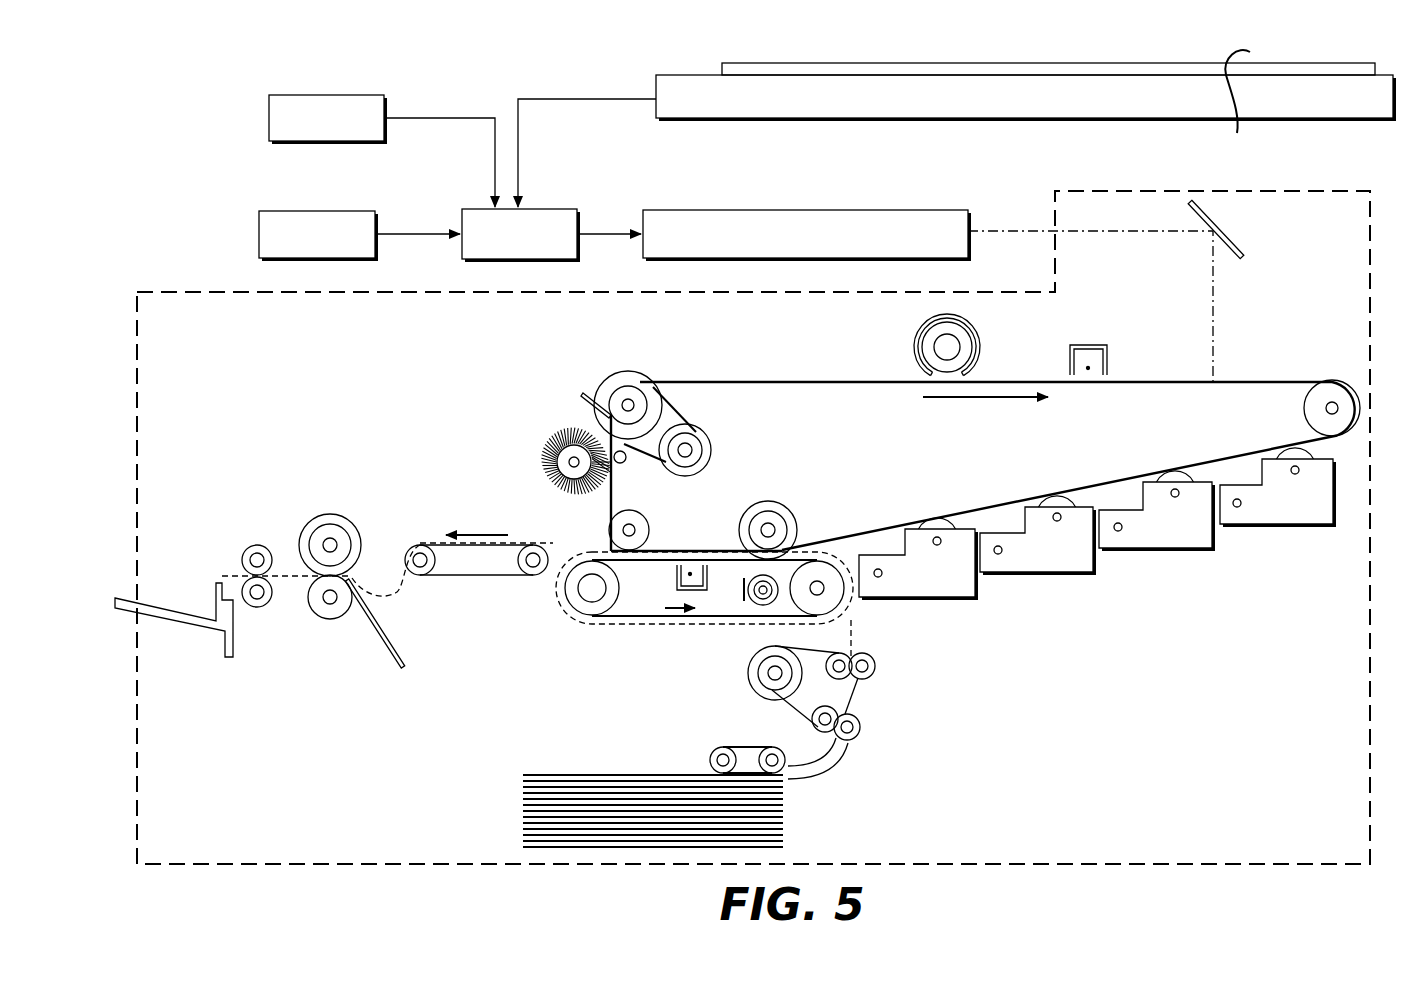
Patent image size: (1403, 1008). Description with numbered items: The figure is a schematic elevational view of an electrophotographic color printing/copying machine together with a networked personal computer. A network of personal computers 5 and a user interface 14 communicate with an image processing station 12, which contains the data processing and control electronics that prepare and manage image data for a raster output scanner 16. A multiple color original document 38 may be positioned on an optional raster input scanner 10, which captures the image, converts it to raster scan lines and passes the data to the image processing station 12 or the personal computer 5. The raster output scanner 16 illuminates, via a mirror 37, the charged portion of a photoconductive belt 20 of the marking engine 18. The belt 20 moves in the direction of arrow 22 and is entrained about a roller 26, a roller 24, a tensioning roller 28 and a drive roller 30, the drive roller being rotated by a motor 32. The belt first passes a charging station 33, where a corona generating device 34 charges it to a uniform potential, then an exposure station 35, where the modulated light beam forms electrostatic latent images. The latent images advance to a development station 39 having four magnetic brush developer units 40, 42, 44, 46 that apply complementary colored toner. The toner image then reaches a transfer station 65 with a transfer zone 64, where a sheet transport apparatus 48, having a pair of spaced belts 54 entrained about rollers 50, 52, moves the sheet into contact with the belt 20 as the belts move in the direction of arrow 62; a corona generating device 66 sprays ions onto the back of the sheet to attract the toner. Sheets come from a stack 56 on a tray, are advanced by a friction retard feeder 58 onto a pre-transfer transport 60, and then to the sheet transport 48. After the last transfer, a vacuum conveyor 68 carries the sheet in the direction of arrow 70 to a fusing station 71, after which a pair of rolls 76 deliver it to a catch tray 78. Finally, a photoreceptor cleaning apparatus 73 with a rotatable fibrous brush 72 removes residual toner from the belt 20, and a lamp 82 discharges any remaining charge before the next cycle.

The personal computer network 5 is at (240, 110).
The raster input scanner 10 is at (640, 85).
The image processing station 12 is at (578, 200).
The user interface 14 is at (255, 200).
The raster output scanner 16 is at (848, 198).
The marking engine 18 is at (1373, 174).
The photoconductive belt 20 is at (1030, 380).
The arrow 22 is at (990, 402).
The roller 24 is at (642, 524).
The roller 26 is at (790, 520).
The tensioning roller 28 is at (1334, 396).
The drive roller 30 is at (607, 381).
The motor 32 is at (712, 447).
The charging station 33 is at (1127, 331).
The corona generating device 34 is at (1098, 342).
The exposure station 35 is at (1231, 370).
The mirror 37 is at (1236, 238).
The original document 38 is at (1241, 107).
The development station 39 is at (1097, 556).
The developer unit 40 is at (1295, 524).
The developer unit 42 is at (1172, 548).
The developer unit 44 is at (1052, 572).
The developer unit 46 is at (932, 598).
The sheet transport apparatus 48 is at (726, 599).
The roller 50 is at (587, 610).
The transfer belt roller 52 is at (820, 598).
The belts 54 is at (605, 563).
The stack of sheets 56 is at (545, 778).
The friction retard feeder 58 is at (745, 745).
The pre-transfer transport 60 is at (846, 695).
The arrow 62 is at (680, 614).
The transfer zone 64 is at (686, 553).
The transfer station 65 is at (718, 570).
The corona generating device 66 is at (677, 578).
The vacuum conveyor 68 is at (478, 578).
The arrow 70 is at (484, 530).
The fusing station 71 is at (323, 510).
The fibrous brush 72 is at (543, 440).
The photoreceptor cleaning apparatus 73 is at (552, 427).
The rolls 76 is at (258, 545).
The catch tray 78 is at (181, 620).
The lamp 82 is at (918, 347).